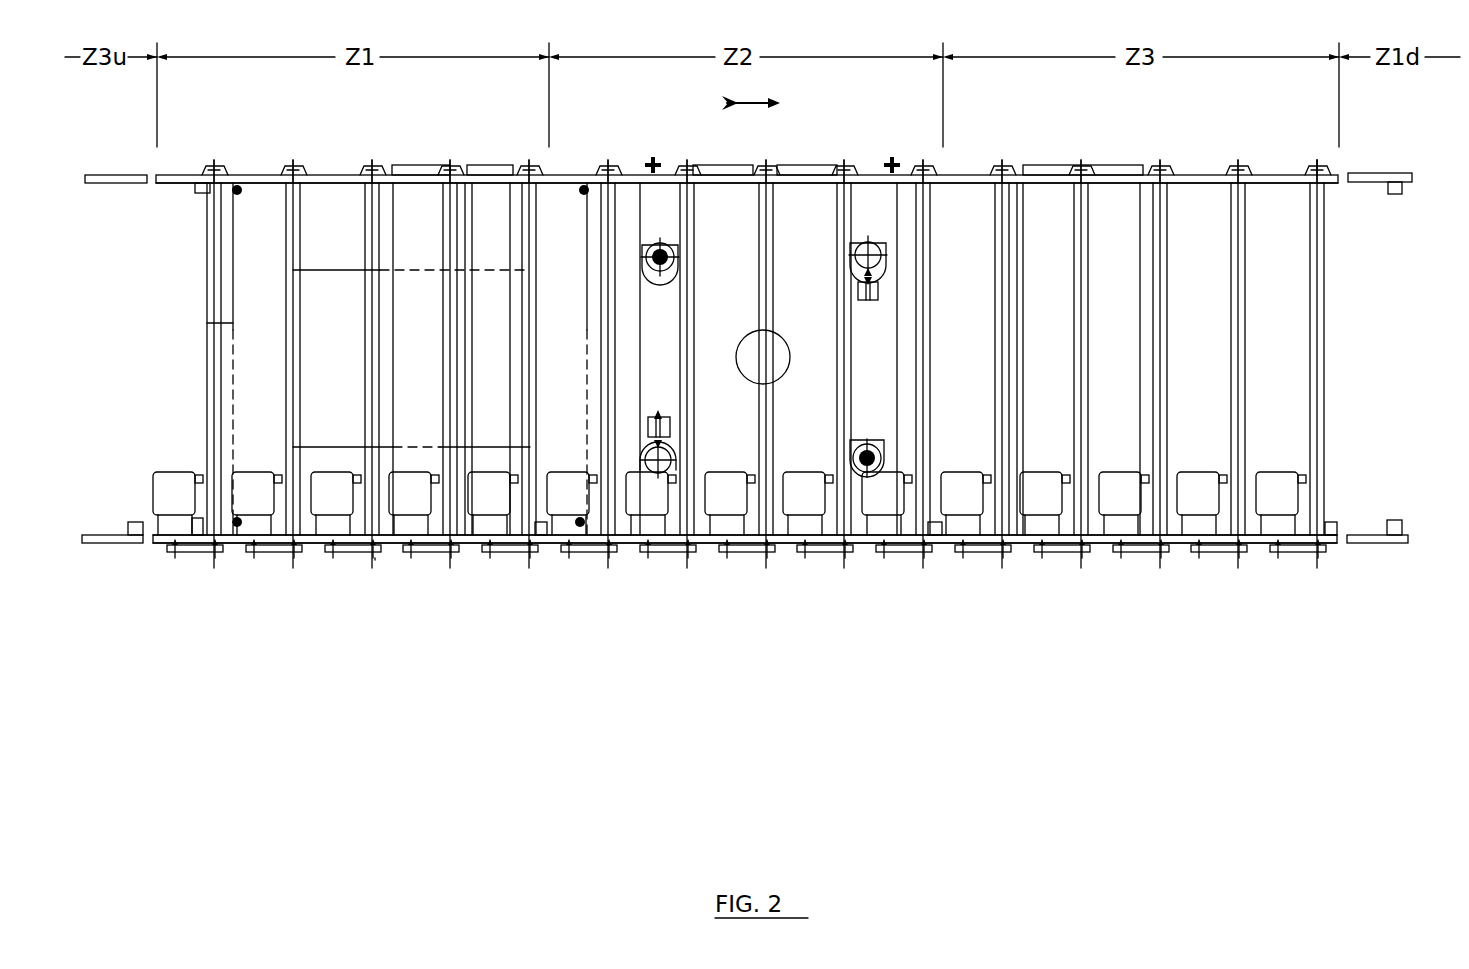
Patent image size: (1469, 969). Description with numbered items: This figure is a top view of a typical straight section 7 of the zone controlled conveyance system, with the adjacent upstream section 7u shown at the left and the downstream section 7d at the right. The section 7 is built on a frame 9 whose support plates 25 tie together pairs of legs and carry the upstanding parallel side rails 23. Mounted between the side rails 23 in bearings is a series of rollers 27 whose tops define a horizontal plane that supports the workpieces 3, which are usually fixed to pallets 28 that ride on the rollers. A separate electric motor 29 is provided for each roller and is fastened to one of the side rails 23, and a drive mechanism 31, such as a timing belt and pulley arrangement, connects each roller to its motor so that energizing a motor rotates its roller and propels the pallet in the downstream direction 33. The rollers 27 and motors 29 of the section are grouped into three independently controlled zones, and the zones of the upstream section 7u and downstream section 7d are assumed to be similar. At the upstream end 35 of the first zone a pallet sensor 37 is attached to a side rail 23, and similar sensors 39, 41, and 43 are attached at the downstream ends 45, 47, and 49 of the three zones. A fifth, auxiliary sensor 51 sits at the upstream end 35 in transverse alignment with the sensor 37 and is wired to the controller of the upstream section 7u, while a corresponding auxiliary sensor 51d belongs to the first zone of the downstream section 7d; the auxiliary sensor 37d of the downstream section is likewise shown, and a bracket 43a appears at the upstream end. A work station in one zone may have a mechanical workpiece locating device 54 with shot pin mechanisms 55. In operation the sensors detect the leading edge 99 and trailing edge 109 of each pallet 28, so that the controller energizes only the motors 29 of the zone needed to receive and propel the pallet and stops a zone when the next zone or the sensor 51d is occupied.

The workpiece 3 is at (345, 440).
The straight section 7 is at (1098, 551).
The upstream section 7u is at (105, 178).
The downstream section 7d is at (1385, 546).
The frame 9 is at (627, 543).
The side rail 23 is at (1200, 175).
The support plate 25 is at (395, 556).
The roller 27 is at (207, 392).
The pallet 28 is at (207, 323).
The electric motor 29 is at (410, 490).
The drive mechanism 31 is at (823, 553).
The downstream direction 33 is at (745, 100).
The upstream end 35 is at (185, 230).
The pallet sensor 37 is at (198, 528).
The downstream stop bracket 37d is at (1392, 528).
The sensor 39 is at (540, 525).
The sensor 41 is at (933, 528).
The sensor 43 is at (1325, 553).
The upstream end bracket 43a is at (130, 522).
The downstream end 45 is at (538, 157).
The downstream end 47 is at (930, 157).
The downstream end 49 is at (1327, 157).
The auxiliary sensor 51 is at (195, 190).
The auxiliary sensor of downstream zone 51d is at (1395, 182).
The workpiece locating device 54 is at (897, 345).
The shot pin mechanism 55 is at (680, 265).
The leading edge 99 is at (618, 365).
The trailing edge 109 is at (233, 260).